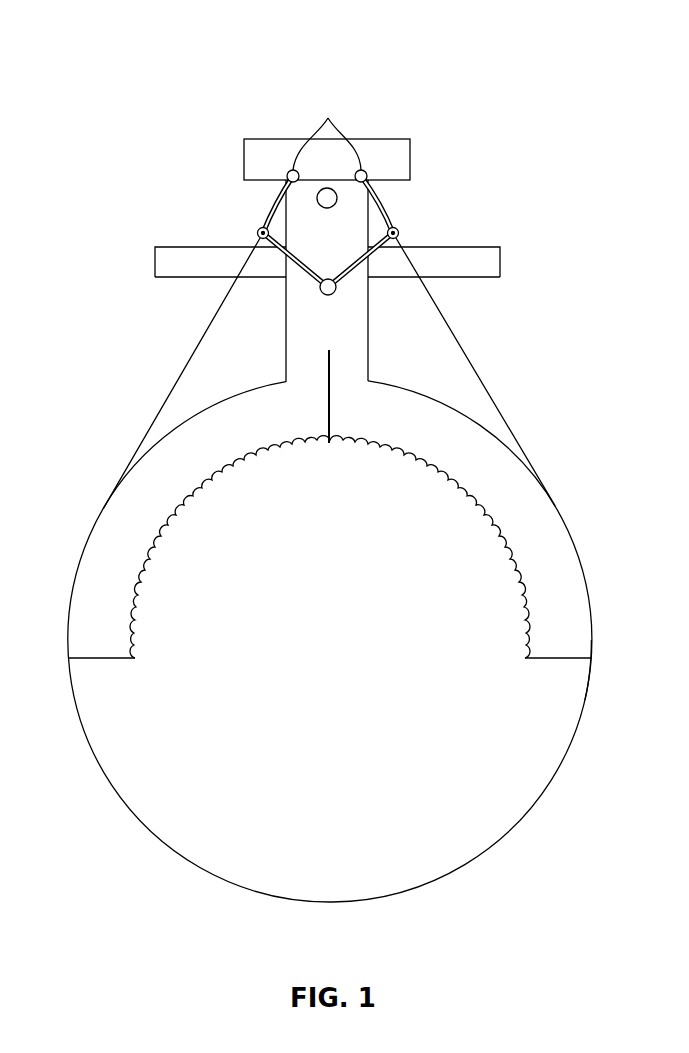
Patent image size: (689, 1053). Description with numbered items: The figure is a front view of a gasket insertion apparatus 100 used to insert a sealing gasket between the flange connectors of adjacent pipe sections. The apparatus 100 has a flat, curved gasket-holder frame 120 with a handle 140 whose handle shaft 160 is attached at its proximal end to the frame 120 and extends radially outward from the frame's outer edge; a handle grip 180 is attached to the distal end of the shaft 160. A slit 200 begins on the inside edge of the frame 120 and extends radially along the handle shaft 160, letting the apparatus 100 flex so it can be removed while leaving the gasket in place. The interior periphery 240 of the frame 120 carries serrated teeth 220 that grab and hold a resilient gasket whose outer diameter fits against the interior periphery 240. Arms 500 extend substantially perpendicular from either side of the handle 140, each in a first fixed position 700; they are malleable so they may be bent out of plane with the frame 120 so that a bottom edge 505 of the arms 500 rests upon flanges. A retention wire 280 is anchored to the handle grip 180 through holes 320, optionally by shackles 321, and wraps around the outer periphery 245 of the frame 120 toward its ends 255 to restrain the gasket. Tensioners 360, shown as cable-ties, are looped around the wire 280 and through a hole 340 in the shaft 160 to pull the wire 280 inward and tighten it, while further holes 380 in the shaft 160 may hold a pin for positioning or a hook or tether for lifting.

The gasket insertion apparatus 100 is at (104, 115).
The gasket-holder frame 120 is at (551, 518).
The handle 140 is at (281, 335).
The handle shaft 160 is at (370, 350).
The handle grip 180 is at (244, 160).
The slit 200 is at (333, 393).
The teeth 220 is at (255, 451).
The interior periphery 240 is at (166, 527).
The outer periphery 245 is at (592, 628).
The ends 255 is at (100, 662).
The retention wire 280 is at (168, 390).
The holes 320 is at (328, 118).
The shackles 321 is at (366, 165).
The hole 340 is at (336, 290).
The tensioners 360 is at (256, 232).
The holes 380 is at (338, 196).
The arms 500 is at (160, 262).
The bottom edge 505 is at (173, 278).
The first fixed position 700 is at (136, 204).